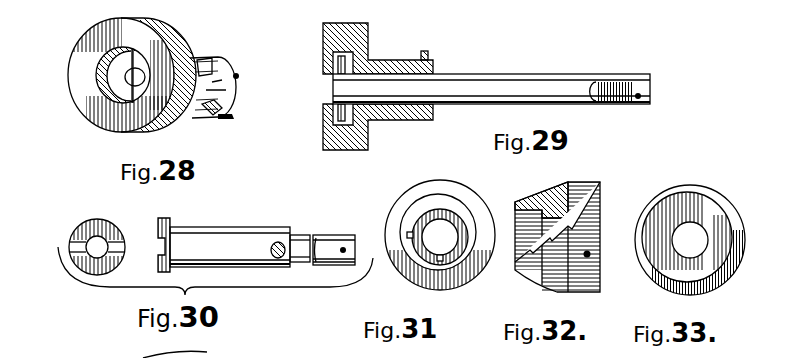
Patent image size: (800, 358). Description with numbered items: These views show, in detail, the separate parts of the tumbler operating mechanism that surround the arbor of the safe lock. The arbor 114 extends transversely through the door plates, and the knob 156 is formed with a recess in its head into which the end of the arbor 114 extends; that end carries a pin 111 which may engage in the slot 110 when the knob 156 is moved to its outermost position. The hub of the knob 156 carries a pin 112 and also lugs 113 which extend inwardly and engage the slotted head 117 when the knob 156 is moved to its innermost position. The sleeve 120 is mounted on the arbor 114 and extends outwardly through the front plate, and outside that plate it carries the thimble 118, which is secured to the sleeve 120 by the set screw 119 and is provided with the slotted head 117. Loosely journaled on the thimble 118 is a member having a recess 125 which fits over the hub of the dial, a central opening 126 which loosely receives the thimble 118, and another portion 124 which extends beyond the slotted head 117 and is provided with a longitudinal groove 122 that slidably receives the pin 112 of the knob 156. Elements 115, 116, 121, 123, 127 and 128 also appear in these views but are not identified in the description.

In FIG. 28, the slot 110 is at (132, 91).
In FIG. 29, the slot 110 is at (355, 62).
In FIG. 28, the pin 111 is at (338, 113).
In FIG. 29, the pin 111 is at (341, 88).
In FIG. 28, the pin 112 is at (238, 75).
In FIG. 29, the pin 112 is at (428, 53).
In FIG. 28, the lugs 113 is at (232, 116).
In FIG. 29, the arbor 114 is at (523, 97).
In FIG. 29, the threaded end 115 is at (627, 85).
In FIG. 29, the pin 116 is at (651, 88).
In FIG. 28, the knob 156 is at (230, 62).
In FIG. 29, the knob 156 is at (384, 122).
In FIG. 30, the slotted head 117 is at (158, 242).
In FIG. 30, the thimble 118 is at (247, 247).
In FIG. 30, the set screw 119 is at (275, 243).
In FIG. 30, the sleeve 120 is at (325, 265).
In FIG. 30, the hole 121 is at (345, 254).
In FIG. 31, the longitudinal groove 122 is at (408, 235).
In FIG. 31, the notch 123 is at (440, 259).
In FIG. 32, the portion 124 is at (517, 220).
In FIG. 32, the recess 125 is at (572, 197).
In FIG. 32, the central opening 126 is at (568, 223).
In FIG. 32, the hole 127 is at (592, 258).
In FIG. 33, the disc 128 is at (694, 246).